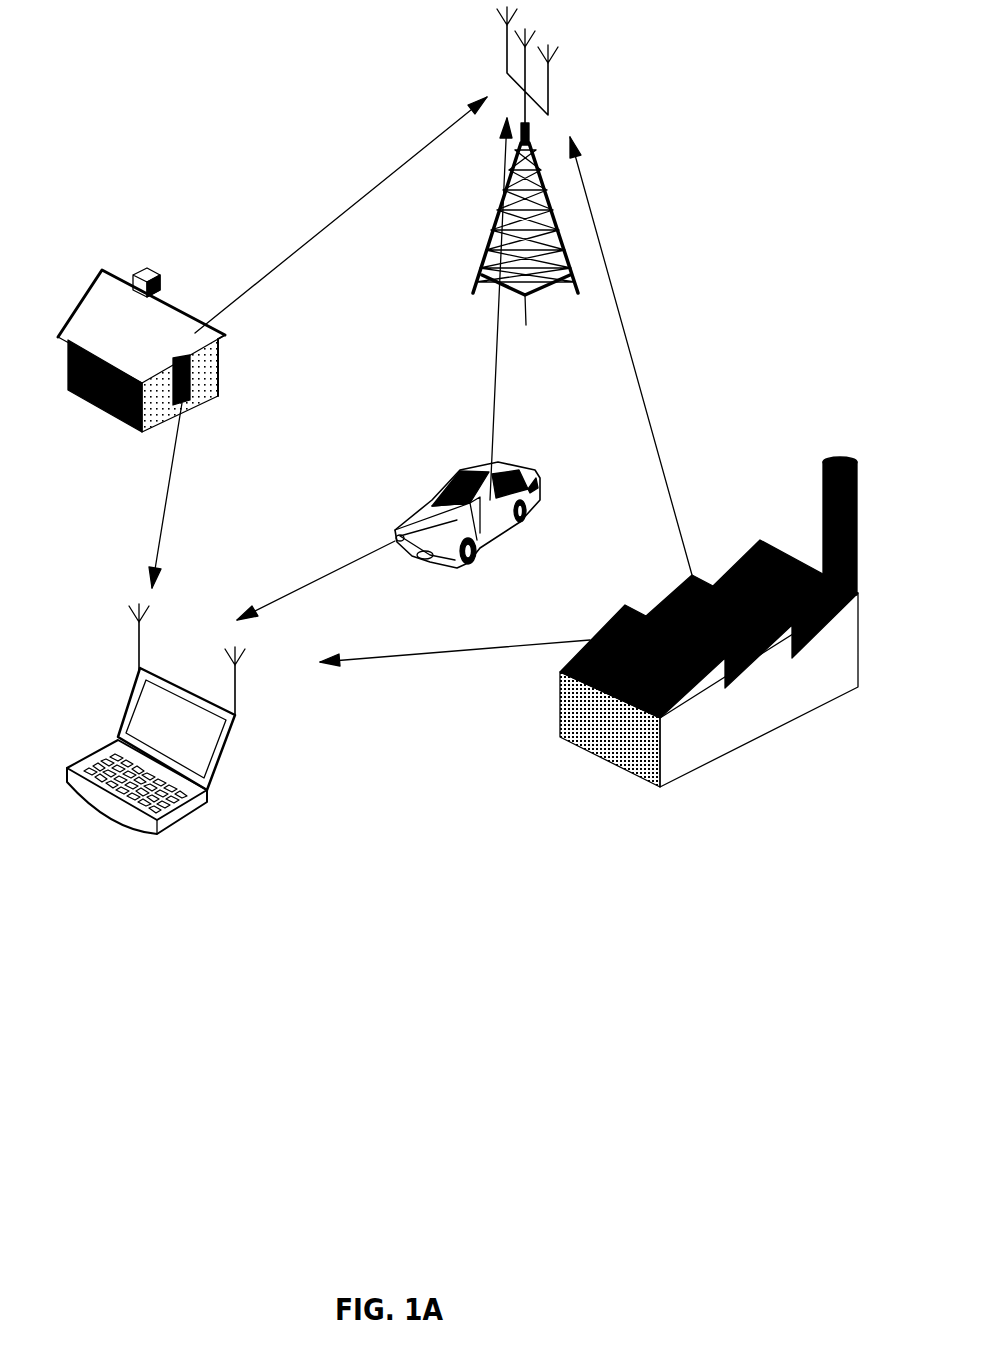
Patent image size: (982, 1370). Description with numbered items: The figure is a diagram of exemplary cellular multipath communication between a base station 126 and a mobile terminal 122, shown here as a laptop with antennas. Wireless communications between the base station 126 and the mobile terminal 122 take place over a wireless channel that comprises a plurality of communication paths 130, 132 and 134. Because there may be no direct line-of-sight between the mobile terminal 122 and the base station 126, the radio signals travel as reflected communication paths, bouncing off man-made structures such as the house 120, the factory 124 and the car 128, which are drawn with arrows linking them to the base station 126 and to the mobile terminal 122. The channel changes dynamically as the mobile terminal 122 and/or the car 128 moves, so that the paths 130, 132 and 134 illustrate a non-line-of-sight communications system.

The house 120 is at (103, 267).
The mobile terminal 122 is at (229, 742).
The factory 124 is at (678, 777).
The base station 126 is at (526, 325).
The car 128 is at (474, 564).
The communication path 130 is at (280, 264).
The communication path 132 is at (490, 413).
The communication path 134 is at (643, 387).